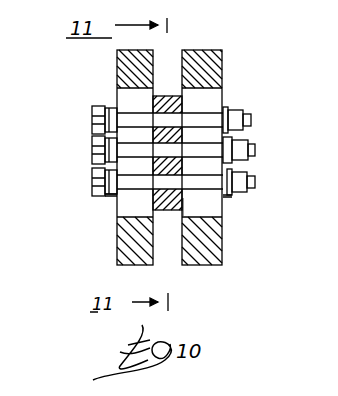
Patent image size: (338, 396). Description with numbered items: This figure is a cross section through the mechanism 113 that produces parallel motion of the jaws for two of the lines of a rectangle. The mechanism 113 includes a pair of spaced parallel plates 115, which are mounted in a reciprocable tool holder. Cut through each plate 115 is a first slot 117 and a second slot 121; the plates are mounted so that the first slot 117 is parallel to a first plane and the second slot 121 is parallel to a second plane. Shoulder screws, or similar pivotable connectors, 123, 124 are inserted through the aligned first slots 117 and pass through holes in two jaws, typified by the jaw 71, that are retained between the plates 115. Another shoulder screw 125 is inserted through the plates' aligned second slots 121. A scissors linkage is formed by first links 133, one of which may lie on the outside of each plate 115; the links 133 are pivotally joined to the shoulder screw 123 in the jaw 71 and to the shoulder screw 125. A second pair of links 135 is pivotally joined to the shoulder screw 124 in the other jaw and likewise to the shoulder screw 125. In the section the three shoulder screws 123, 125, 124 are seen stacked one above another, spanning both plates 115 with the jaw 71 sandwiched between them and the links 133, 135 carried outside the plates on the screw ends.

The jaw 71 is at (172, 96).
The mechanism 113 is at (108, 263).
The plates 115 is at (125, 234).
The first slot 117 is at (206, 88).
The second slot 121 is at (139, 143).
The shoulder screw 123 is at (132, 118).
The shoulder screw 124 is at (206, 206).
The shoulder screw 125 is at (115, 172).
The first link 133 is at (114, 106).
The second pair of links 135 is at (110, 200).